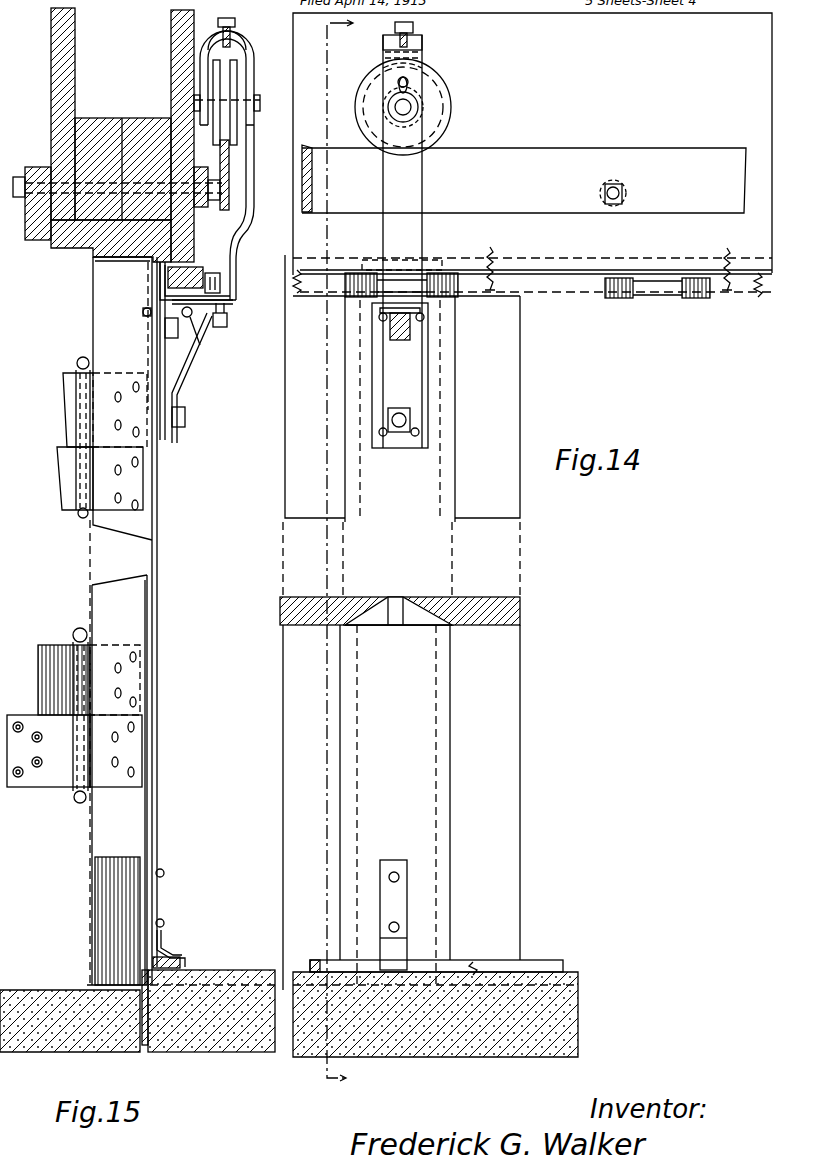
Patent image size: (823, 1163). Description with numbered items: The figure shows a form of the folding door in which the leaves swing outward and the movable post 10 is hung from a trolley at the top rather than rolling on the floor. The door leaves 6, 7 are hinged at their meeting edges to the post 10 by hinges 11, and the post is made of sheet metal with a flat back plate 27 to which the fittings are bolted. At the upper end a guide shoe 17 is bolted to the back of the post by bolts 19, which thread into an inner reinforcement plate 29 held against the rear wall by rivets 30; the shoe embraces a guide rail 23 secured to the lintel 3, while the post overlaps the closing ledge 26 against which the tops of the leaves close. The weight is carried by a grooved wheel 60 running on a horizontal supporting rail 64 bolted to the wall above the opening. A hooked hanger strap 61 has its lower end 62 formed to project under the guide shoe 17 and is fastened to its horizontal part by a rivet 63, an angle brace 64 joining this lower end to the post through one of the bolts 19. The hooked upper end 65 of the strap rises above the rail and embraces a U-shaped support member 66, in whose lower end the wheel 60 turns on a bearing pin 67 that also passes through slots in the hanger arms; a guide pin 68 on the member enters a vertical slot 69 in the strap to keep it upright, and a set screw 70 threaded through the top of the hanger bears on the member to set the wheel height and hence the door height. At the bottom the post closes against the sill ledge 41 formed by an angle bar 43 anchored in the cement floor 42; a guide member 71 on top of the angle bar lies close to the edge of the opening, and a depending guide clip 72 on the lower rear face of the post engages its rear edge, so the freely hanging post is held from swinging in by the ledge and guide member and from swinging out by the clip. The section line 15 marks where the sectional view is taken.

In FIG. 15, the lintel 3 is at (70, 247).
In FIG. 14, the lintel 3 is at (587, 247).
In FIG. 14, the door leaf 6 is at (285, 488).
In FIG. 14, the door leaf 7 is at (522, 508).
In FIG. 15, the movable post 10 is at (152, 522).
In FIG. 14, the movable post 10 is at (445, 490).
In FIG. 15, the hinges 11 is at (76, 364).
In FIG. 14, the section line 15 is at (336, 563).
In FIG. 15, the guide shoe 17 is at (221, 281).
In FIG. 14, the guide shoe 17 is at (538, 298).
In FIG. 15, the bolts 19 is at (185, 420).
In FIG. 14, the bolts 19 is at (410, 338).
In FIG. 15, the guide rail 23 is at (203, 270).
In FIG. 14, the guide rail 23 is at (740, 300).
In FIG. 15, the closing ledge 26 is at (150, 262).
In FIG. 15, the back plate 27 is at (155, 826).
In FIG. 15, the reinforcement plate 29 is at (148, 347).
In FIG. 15, the rivets 30 is at (143, 312).
In FIG. 14, the rivets 30 is at (419, 432).
In FIG. 15, the sill ledge 41 is at (140, 982).
In FIG. 15, the floor 42 is at (250, 972).
In FIG. 14, the floor 42 is at (578, 972).
In FIG. 15, the angle bar 43 is at (150, 1040).
In FIG. 15, the wheel 60 is at (236, 136).
In FIG. 14, the wheel 60 is at (452, 100).
In FIG. 15, the hanger strap 61 is at (232, 262).
In FIG. 14, the hanger strap 61 is at (424, 190).
In FIG. 15, the lower end of hanger strap 62 is at (192, 318).
In FIG. 15, the rivet 63 is at (196, 340).
In FIG. 15, the angle brace / horizontal supporting rail 64 is at (233, 170).
In FIG. 14, the angle brace / horizontal supporting rail 64 is at (666, 148).
In FIG. 15, the hooked upper end 65 is at (240, 45).
In FIG. 14, the hooked upper end 65 is at (425, 62).
In FIG. 15, the U-shaped support member 66 is at (208, 44).
In FIG. 15, the bearing pin 67 is at (196, 102).
In FIG. 14, the bearing pin 67 is at (405, 108).
In FIG. 15, the guide pin 68 is at (205, 72).
In FIG. 14, the guide pin 68 is at (408, 80).
In FIG. 14, the vertical slot 69 is at (398, 80).
In FIG. 15, the set screw 70 is at (236, 22).
In FIG. 14, the set screw 70 is at (414, 27).
In FIG. 15, the guide member 71 is at (172, 945).
In FIG. 14, the guide member 71 is at (533, 960).
In FIG. 15, the guide clip 72 is at (184, 964).
In FIG. 14, the guide clip 72 is at (400, 900).